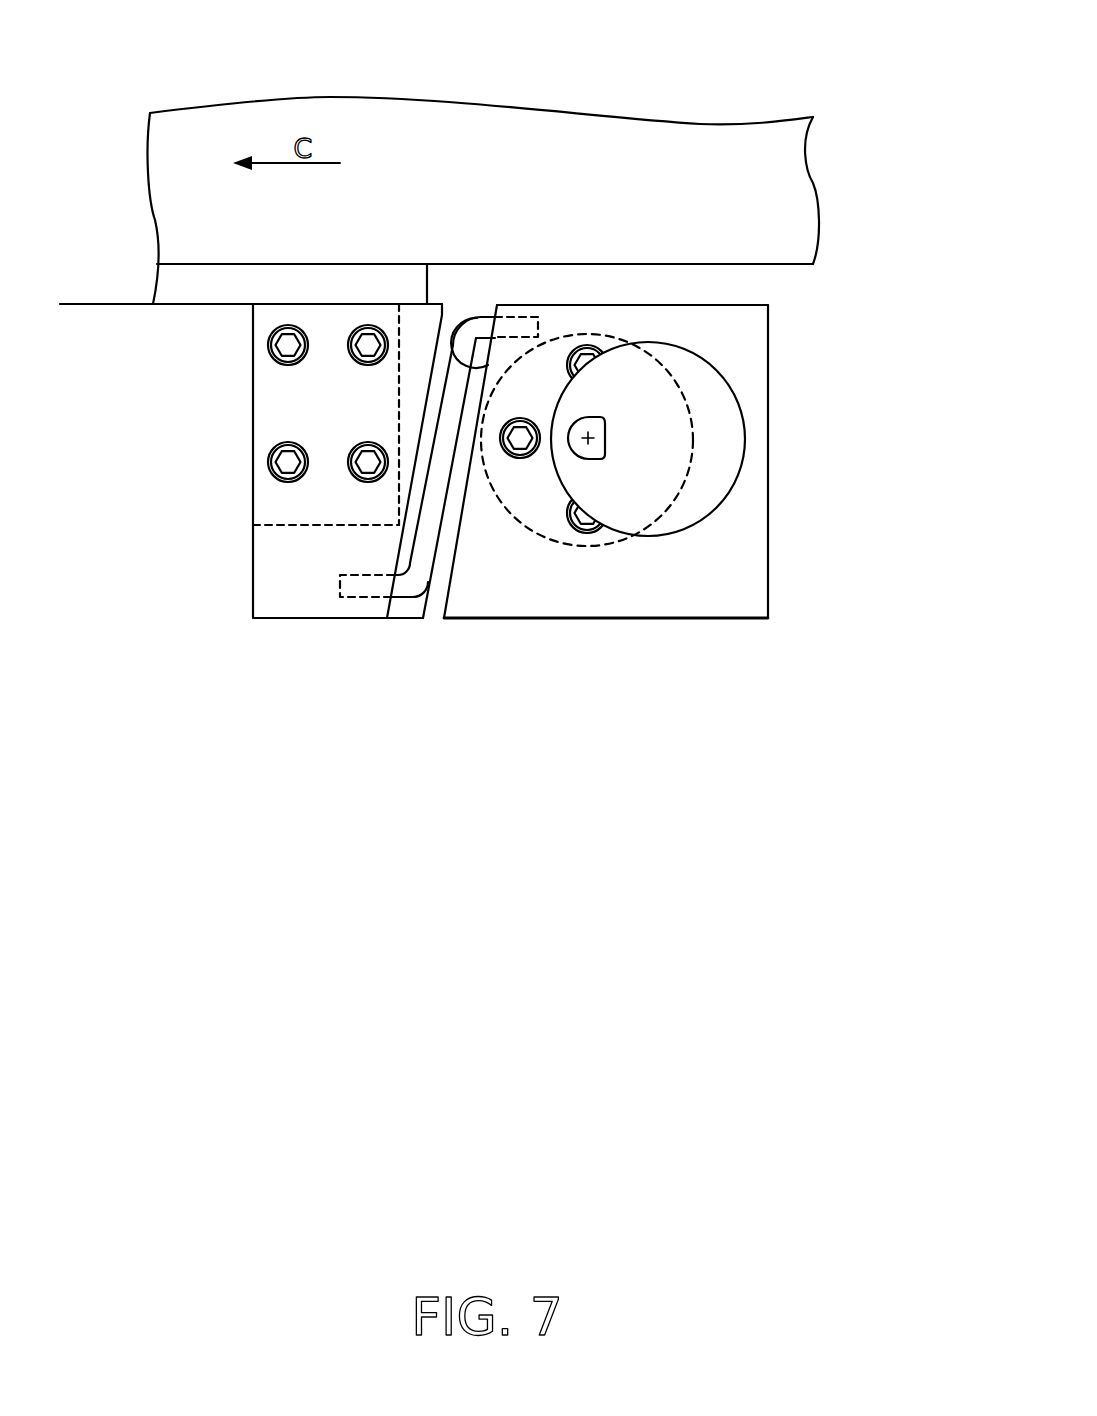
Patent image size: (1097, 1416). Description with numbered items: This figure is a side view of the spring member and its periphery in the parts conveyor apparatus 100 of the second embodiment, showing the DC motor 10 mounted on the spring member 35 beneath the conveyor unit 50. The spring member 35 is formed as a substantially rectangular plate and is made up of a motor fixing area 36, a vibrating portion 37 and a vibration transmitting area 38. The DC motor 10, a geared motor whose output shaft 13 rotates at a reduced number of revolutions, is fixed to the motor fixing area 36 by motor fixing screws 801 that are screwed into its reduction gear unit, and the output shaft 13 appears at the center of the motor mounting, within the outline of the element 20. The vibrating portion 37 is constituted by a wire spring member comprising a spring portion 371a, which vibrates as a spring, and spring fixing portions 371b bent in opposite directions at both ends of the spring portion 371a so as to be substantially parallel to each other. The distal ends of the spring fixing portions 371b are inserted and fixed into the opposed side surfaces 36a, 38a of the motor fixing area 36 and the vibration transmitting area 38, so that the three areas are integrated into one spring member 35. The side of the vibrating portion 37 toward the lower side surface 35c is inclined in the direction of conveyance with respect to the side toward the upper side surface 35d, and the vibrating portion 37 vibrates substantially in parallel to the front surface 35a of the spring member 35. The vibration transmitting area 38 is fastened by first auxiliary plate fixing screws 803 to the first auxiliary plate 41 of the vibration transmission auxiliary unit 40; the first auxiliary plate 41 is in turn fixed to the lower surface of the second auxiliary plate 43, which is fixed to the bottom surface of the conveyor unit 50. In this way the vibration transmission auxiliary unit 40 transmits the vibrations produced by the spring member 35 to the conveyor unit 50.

The parts conveyor apparatus 100 is at (722, 91).
The conveyor unit 50 is at (802, 190).
The vibration transmission auxiliary unit 40 is at (251, 433).
The second auxiliary plate 43 is at (197, 306).
The first auxiliary plate 41 is at (289, 538).
The spring member 35 is at (557, 510).
The vibration transmitting area 38 is at (355, 482).
The side surface of vibration transmitting area 38a is at (435, 337).
The first auxiliary plate fixing screws 803 is at (287, 325).
The vibrating portion 37 is at (466, 482).
The spring portion 371a is at (430, 542).
The spring fixing portions 371b is at (521, 317).
The motor fixing area 36 is at (653, 482).
The side surface of motor fixing area 36a is at (490, 306).
The front surface 35a is at (768, 578).
The lower side surface 35c is at (713, 622).
The upper side surface 35d is at (738, 305).
The DC motor 10 is at (660, 461).
The motor fixing screws 801 is at (520, 445).
The rotary member 20 is at (757, 383).
The output shaft 13 is at (606, 438).